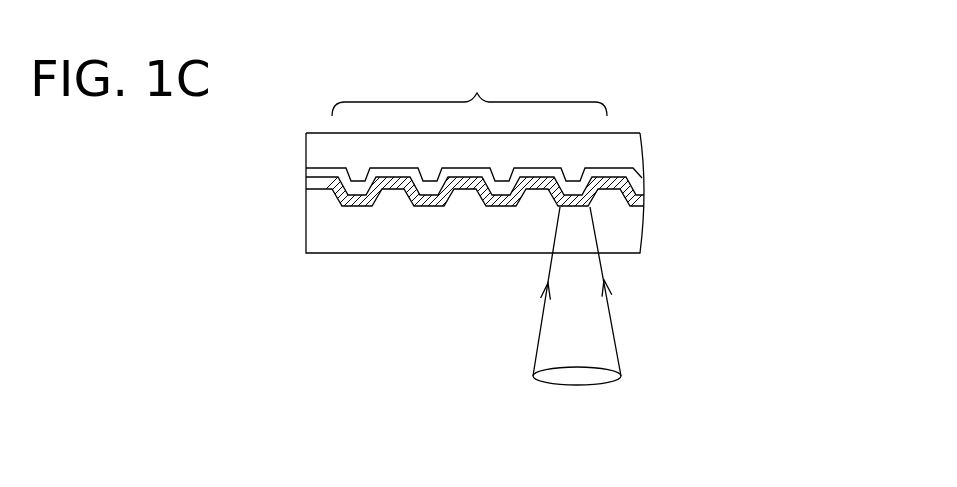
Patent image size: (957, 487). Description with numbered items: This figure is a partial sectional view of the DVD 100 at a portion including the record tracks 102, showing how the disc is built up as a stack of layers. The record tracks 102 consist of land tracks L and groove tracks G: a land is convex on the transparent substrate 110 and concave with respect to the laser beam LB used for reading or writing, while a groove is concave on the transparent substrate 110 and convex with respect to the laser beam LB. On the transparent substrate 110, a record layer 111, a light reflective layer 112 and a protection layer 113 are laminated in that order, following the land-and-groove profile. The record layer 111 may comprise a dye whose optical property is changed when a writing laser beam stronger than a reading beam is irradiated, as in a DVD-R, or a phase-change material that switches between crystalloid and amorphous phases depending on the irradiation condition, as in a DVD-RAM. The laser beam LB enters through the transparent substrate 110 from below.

The optical recording medium 100 is at (672, 152).
The record tracks 102 is at (469, 91).
The transparent substrate 110 is at (306, 240).
The record layer 111 is at (306, 193).
The light reflective layer 112 is at (306, 178).
The protection layer 113 is at (306, 143).